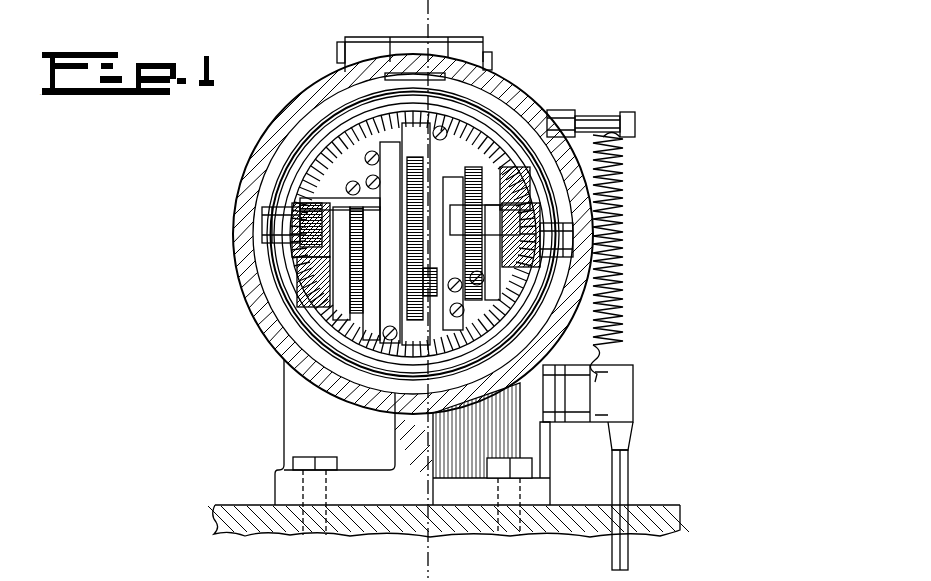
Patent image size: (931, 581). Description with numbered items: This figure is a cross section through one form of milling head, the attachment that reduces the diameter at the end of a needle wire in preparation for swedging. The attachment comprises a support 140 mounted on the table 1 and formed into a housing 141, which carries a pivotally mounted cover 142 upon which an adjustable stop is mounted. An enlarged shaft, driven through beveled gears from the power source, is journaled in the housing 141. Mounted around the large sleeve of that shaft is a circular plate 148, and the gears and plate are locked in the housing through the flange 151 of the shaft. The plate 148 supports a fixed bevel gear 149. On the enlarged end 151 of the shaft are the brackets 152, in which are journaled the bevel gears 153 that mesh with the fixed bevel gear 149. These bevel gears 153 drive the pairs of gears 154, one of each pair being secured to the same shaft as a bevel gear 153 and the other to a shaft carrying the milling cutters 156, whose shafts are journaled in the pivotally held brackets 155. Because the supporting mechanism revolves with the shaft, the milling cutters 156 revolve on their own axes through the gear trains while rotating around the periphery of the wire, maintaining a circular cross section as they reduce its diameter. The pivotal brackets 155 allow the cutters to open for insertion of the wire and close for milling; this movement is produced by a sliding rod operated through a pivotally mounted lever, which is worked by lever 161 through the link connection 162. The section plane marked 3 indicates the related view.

The table 1 is at (652, 505).
The section line 3 is at (433, 555).
The support 140 is at (300, 428).
The housing 141 is at (243, 266).
The pivotally mounted cover 142 is at (532, 103).
The circular plate 148 is at (480, 123).
The fixed bevel gear 149 is at (358, 317).
The flange of shaft 151 is at (330, 187).
The brackets 152 is at (480, 295).
The bevel gears 153 is at (577, 213).
The pairs of gears 154 is at (538, 223).
The pivotally held brackets 155 is at (442, 170).
The milling cutters 156 is at (415, 316).
The lever 161 is at (587, 420).
The link connection 162 is at (630, 470).